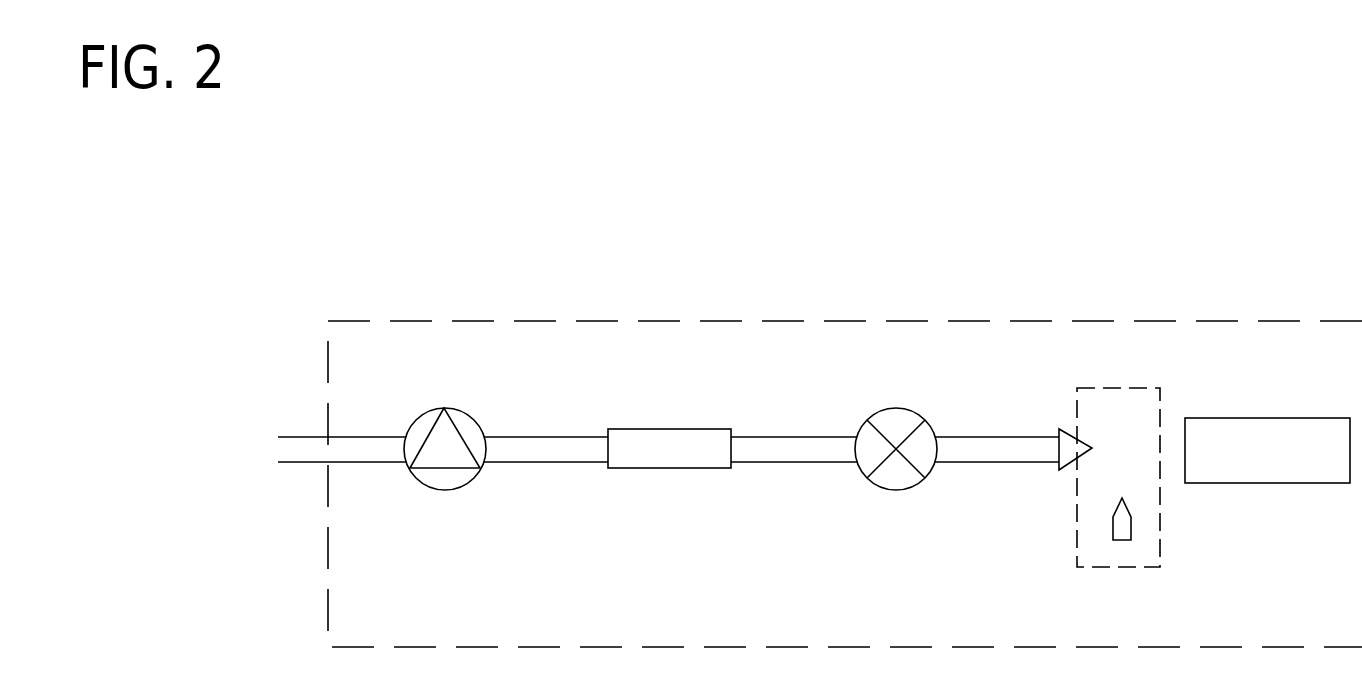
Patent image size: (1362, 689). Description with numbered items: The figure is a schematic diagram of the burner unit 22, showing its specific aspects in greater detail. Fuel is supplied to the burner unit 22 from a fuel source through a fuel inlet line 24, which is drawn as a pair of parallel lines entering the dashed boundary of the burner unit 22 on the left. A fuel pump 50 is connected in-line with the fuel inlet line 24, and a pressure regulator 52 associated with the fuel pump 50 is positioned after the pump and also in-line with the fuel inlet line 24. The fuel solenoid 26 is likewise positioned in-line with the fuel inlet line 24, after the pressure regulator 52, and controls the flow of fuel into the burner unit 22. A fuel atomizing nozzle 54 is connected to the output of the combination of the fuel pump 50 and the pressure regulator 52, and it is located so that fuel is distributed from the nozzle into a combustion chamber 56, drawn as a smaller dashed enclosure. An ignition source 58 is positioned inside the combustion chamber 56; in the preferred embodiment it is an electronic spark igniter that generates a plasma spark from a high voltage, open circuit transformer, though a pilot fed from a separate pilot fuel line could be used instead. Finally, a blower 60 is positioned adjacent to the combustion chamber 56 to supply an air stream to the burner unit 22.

The burner unit 22 is at (950, 320).
The fuel inlet line 24 is at (305, 437).
The fuel solenoid 26 is at (897, 408).
The fuel pump 50 is at (443, 408).
The pressure regulator 52 is at (657, 429).
The fuel atomizing nozzle 54 is at (1078, 440).
The combustion chamber 56 is at (1117, 388).
The ignition source 58 is at (1122, 540).
The blower 60 is at (1250, 418).